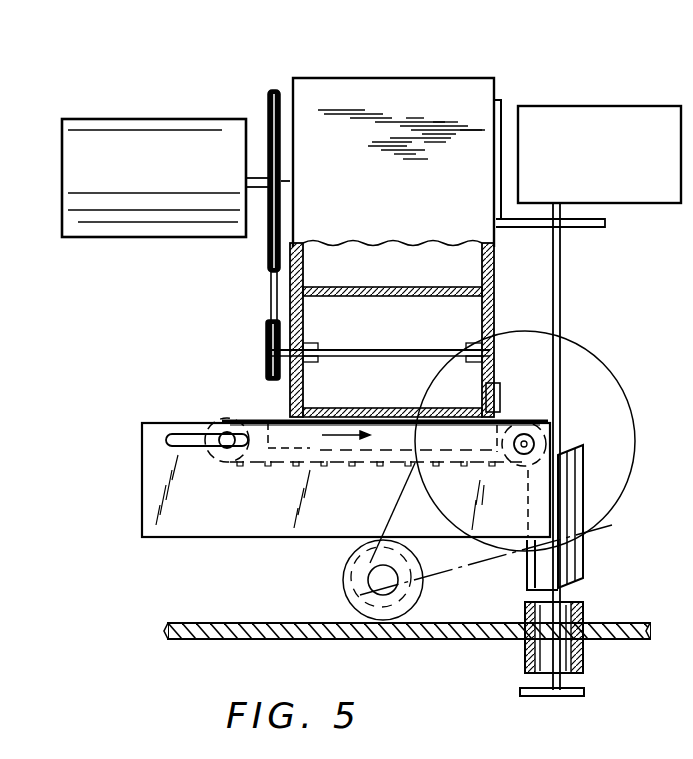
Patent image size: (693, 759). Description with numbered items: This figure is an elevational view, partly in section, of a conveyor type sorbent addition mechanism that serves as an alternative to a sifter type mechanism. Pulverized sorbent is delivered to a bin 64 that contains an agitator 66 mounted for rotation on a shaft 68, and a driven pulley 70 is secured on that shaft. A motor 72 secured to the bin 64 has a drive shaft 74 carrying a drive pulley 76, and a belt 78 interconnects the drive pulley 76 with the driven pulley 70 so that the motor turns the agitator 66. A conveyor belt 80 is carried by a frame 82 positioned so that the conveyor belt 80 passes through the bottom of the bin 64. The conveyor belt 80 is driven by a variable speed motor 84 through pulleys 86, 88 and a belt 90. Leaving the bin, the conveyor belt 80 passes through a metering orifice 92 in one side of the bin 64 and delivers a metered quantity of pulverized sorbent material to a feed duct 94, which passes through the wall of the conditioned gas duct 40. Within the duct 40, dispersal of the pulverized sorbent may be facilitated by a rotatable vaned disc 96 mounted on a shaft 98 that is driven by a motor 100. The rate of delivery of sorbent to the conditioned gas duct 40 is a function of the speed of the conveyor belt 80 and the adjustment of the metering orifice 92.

The conditioned gas duct 40 is at (647, 623).
The bin 64 is at (497, 275).
The agitator 66 is at (400, 290).
The shaft 68 is at (270, 348).
The driven pulley 70 is at (268, 325).
The motor 72 is at (125, 237).
The drive shaft 74 is at (287, 183).
The drive pulley 76 is at (268, 265).
The belt 78 is at (272, 290).
The conveyor belt 80 is at (270, 466).
The frame 82 is at (146, 492).
The variable speed motor 84 is at (346, 582).
The pulley 86 is at (410, 560).
The pulley 88 is at (598, 538).
The belt 90 is at (434, 582).
The metering orifice 92 is at (500, 393).
The feed duct 94 is at (585, 568).
The rotatable vaned disc 96 is at (585, 691).
The shaft 98 is at (562, 297).
The motor 100 is at (653, 204).